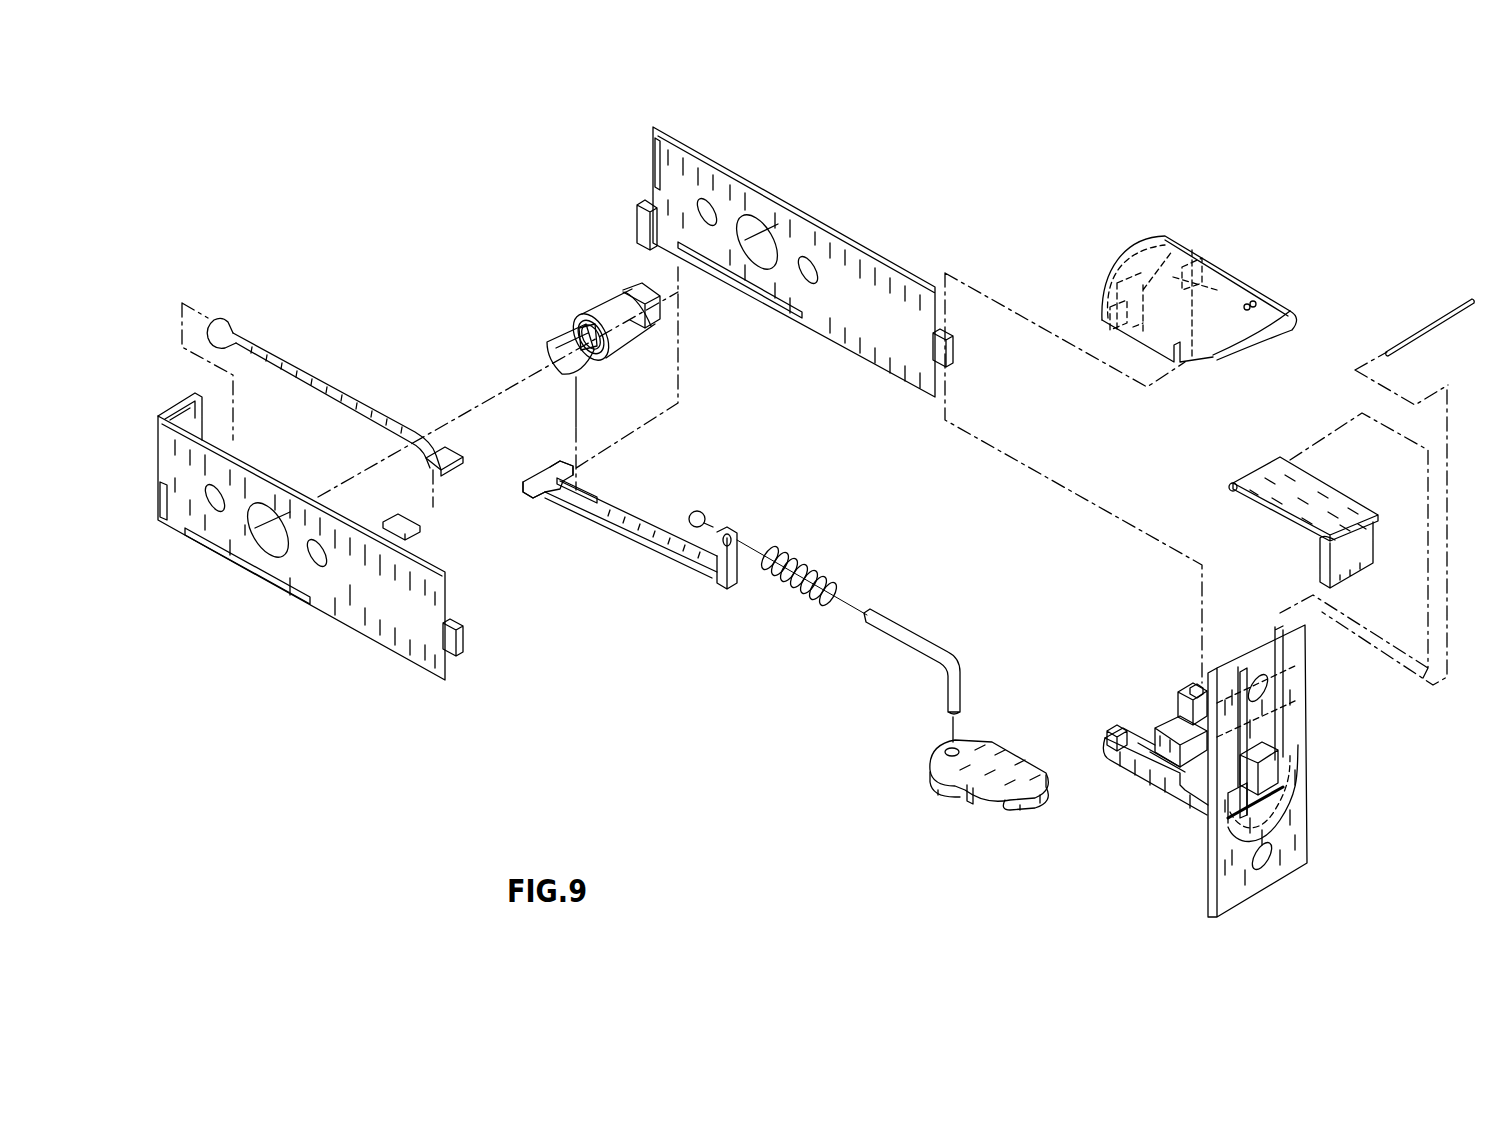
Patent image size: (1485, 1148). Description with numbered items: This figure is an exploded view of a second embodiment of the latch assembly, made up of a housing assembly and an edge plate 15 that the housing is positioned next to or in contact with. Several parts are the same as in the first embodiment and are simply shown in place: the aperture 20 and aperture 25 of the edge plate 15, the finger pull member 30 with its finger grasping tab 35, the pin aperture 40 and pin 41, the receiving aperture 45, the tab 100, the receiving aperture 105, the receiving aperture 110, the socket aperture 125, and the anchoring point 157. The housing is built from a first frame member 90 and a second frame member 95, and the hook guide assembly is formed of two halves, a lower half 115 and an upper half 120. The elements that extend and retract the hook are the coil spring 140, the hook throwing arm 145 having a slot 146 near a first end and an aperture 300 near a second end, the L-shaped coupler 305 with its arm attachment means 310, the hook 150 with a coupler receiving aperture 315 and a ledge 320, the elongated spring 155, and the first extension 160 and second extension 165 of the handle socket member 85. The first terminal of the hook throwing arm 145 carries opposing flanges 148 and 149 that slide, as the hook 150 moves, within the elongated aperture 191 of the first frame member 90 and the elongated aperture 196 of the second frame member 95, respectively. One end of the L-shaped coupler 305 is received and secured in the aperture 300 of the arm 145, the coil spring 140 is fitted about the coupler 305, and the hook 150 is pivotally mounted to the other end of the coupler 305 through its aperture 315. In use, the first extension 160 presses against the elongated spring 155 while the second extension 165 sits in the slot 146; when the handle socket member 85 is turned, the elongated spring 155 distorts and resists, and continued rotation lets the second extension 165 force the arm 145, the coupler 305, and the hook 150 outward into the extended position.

The edge plate 15 is at (1232, 897).
The aperture 20 is at (1262, 692).
The aperture 25 is at (1262, 858).
The finger pull member 30 is at (1330, 497).
The finger grasping tab 35 is at (1350, 567).
The pin aperture 40 is at (1231, 486).
The pin 41 is at (1457, 303).
The receiving aperture 45 is at (1278, 640).
The handle socket member 85 is at (592, 355).
The first frame member 90 is at (383, 625).
The second frame member 95 is at (865, 266).
The tab 100 is at (463, 637).
The receiving aperture 105 is at (1199, 690).
The receiving aperture 110 is at (1190, 243).
The lower half of hook guide assembly 115 is at (1163, 795).
The upper half of hook guide assembly 120 is at (1213, 342).
The socket aperture 125 is at (270, 545).
The coil spring 140 is at (782, 583).
The hook throwing arm 145 is at (672, 545).
The slot 146 is at (585, 500).
The flange 148 is at (535, 493).
The flange 149 is at (560, 457).
The hook 150 is at (1007, 772).
The elongated spring 155 is at (307, 362).
The anchoring point 157 is at (423, 535).
The first extension 160 is at (623, 303).
The second extension 165 is at (558, 344).
The elongated aperture 191 is at (233, 560).
The elongated aperture 196 is at (788, 313).
The aperture 300 is at (732, 535).
The L-shaped coupler 305 is at (922, 650).
The arm attachment means 310 is at (700, 512).
The coupler receiving aperture 315 is at (950, 748).
The ledge 320 is at (968, 805).